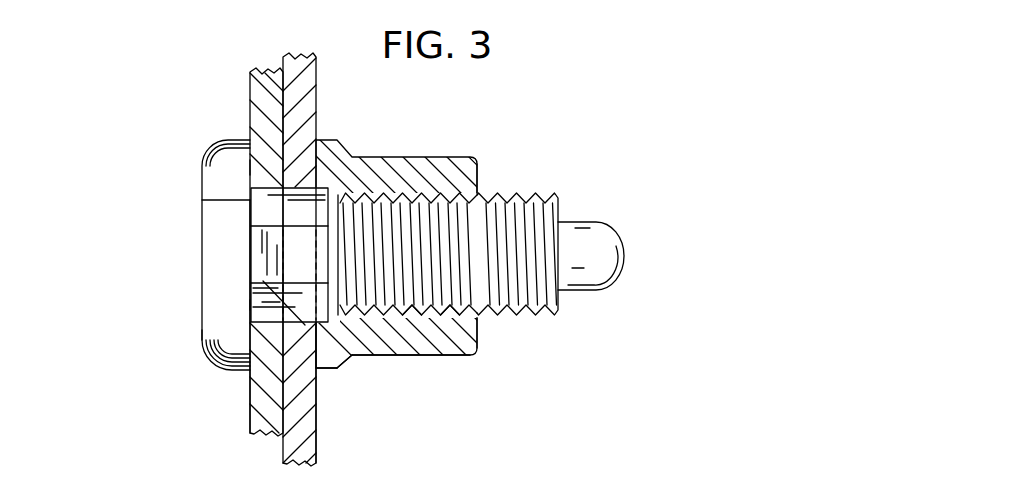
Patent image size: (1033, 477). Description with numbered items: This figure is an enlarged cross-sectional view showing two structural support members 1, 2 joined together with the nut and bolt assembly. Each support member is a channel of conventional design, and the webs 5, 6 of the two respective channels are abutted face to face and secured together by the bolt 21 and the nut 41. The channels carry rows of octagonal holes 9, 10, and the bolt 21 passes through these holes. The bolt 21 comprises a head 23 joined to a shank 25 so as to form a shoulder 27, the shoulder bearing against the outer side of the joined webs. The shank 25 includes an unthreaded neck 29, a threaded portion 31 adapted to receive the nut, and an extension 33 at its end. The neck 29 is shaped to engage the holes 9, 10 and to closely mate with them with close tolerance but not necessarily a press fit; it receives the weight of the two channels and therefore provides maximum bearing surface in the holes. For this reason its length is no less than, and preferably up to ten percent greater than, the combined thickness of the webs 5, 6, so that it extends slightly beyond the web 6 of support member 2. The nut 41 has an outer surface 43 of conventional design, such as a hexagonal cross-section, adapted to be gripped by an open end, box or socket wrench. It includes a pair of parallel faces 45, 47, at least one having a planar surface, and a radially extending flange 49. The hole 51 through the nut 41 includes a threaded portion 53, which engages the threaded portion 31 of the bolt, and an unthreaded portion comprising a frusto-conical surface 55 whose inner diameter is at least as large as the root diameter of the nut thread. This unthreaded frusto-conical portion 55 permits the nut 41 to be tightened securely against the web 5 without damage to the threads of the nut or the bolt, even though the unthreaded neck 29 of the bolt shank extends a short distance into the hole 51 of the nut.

The support member 1 is at (250, 92).
The support member 2 is at (288, 55).
The web 5 is at (250, 406).
The web 6 is at (283, 448).
The holes 9 is at (250, 306).
The holes 10 is at (263, 281).
The bolt 21 is at (203, 162).
The head 23 is at (210, 200).
The shank 25 is at (482, 251).
The shoulder 27 is at (258, 160).
The unthreaded neck 29 is at (265, 208).
The threaded portion 31 is at (528, 317).
The extension 33 is at (607, 242).
The nut 41 is at (458, 153).
The outer surface 43 is at (457, 353).
The face 45 is at (330, 365).
The face 47 is at (477, 170).
The radially extending flange 49 is at (330, 370).
The hole 51 is at (410, 205).
The threaded portion 53 is at (450, 304).
The frusto-conical surface 55 is at (250, 337).